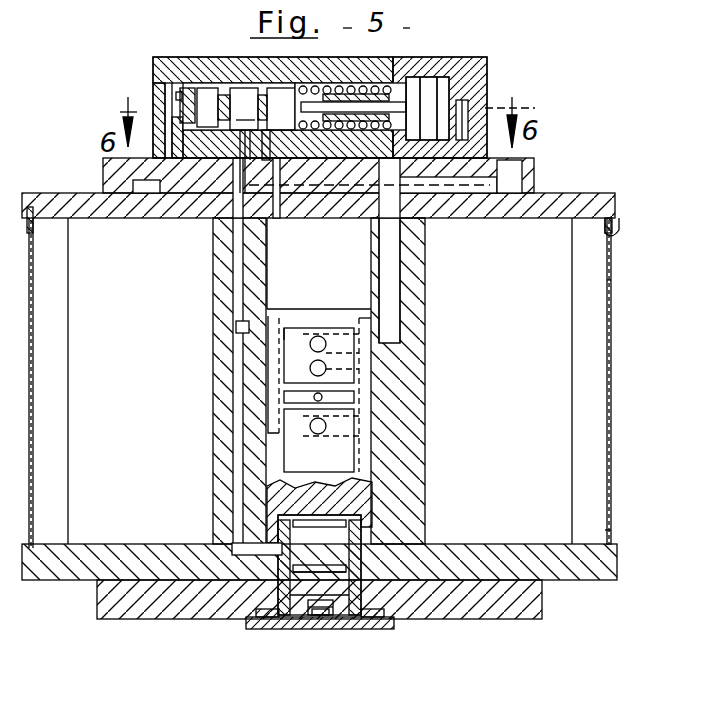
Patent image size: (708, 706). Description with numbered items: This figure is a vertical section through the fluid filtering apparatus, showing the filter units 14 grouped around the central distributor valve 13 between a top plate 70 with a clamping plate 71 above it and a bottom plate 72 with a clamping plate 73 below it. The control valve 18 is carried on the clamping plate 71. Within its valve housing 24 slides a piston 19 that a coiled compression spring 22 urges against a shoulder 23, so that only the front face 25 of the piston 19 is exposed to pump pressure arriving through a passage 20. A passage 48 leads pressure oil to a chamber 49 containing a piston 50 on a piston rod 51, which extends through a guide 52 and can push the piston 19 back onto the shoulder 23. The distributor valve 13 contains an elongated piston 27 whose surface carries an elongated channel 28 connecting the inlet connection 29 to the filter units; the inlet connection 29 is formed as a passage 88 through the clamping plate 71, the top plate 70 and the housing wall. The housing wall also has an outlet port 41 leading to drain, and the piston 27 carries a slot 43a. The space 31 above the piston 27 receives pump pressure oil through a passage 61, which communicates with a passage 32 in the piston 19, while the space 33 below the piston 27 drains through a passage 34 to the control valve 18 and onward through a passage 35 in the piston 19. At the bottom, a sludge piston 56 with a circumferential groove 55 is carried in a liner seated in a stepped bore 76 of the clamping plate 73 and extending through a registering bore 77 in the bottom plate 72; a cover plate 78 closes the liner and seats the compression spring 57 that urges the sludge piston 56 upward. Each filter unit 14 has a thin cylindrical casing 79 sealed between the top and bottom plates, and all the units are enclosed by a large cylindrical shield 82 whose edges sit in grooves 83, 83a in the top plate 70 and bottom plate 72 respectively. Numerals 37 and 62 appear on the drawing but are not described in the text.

The distributor valve 13 is at (426, 424).
The filter units 14 is at (62, 248).
The control valve 18 is at (190, 50).
The sliding piston 19 is at (240, 138).
The passage 20 is at (168, 92).
The coiled compression spring 22 is at (418, 58).
The shoulder 23 is at (178, 88).
The valve housing 24 is at (228, 57).
The front face 25 is at (152, 103).
The elongated piston 27 is at (372, 482).
The elongated channel 28 is at (359, 368).
The inlet connection 29 is at (371, 333).
The space 31 is at (289, 291).
The passage 32 is at (213, 272).
The space 33 is at (336, 530).
The passage 34 is at (217, 547).
The passage 35 is at (222, 112).
The rod 37 is at (250, 145).
The outlet port 41 is at (246, 328).
The slot 43a is at (304, 334).
The passage 48 is at (485, 125).
The chamber 49 is at (460, 85).
The piston 50 is at (450, 95).
The piston rod 51 is at (468, 57).
The guide 52 is at (352, 90).
The circumferential groove 55 is at (340, 568).
The sludge piston 56 is at (364, 542).
The compression spring 57 is at (324, 615).
The passage 61 is at (290, 212).
The passage 62 is at (333, 188).
The top plate 70 is at (593, 197).
The clamping plate 71 is at (535, 183).
The bottom plate 72 is at (599, 572).
The clamping plate 73 is at (539, 617).
The stepped bore 76 is at (291, 610).
The registering bore 77 is at (297, 558).
The cover plate 78 is at (372, 629).
The cylindrical casing 79 is at (572, 393).
The cylindrical shield 82 is at (607, 294).
The groove 83 is at (607, 238).
The groove 83a is at (614, 545).
The passage 88 is at (393, 287).